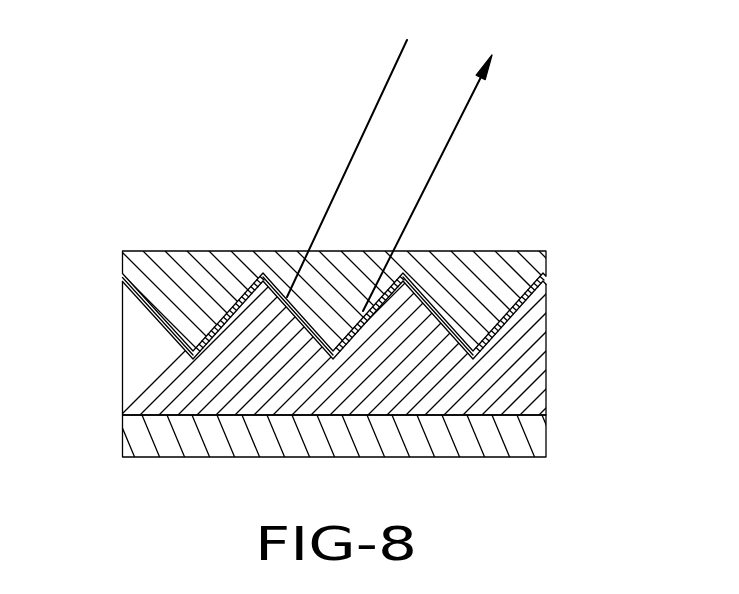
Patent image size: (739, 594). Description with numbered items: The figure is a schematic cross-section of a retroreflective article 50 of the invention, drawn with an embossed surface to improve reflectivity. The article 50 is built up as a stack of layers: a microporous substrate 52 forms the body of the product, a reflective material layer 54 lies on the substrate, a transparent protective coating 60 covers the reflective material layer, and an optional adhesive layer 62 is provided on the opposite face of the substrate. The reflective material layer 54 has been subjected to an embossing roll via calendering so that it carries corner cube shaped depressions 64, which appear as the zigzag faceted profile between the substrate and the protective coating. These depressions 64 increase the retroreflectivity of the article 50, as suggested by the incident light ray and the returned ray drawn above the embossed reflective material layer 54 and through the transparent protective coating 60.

The article 50 is at (80, 218).
The microporous substrate 52 is at (478, 382).
The reflective material layer 54 is at (513, 302).
The transparent protective coating 60 is at (525, 268).
The adhesive layer 62 is at (352, 458).
The corner cube shaped depressions 64 is at (147, 298).